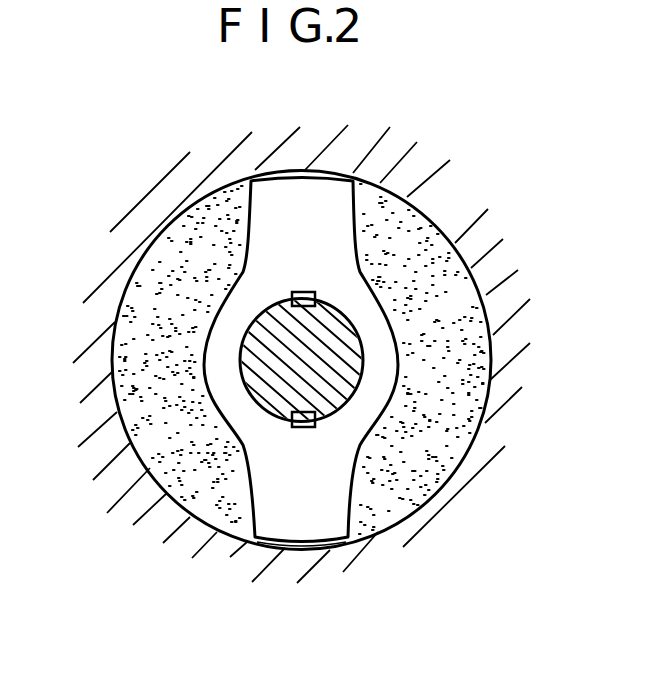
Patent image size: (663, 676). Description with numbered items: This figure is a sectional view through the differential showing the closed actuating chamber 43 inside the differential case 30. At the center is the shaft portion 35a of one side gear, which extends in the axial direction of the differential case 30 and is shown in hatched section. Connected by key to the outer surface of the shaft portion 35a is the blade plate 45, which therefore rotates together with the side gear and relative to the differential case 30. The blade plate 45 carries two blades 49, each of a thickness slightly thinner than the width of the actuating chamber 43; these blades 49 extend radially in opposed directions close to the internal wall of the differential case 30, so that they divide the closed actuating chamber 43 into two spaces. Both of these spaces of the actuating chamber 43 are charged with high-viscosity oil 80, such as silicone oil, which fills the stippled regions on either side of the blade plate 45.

The differential case 30 is at (93, 378).
The closed actuating chamber 43 is at (473, 358).
The high-viscosity oil 80 is at (468, 428).
The blade plate 45 is at (377, 293).
The blades 49 is at (312, 528).
The shaft portion 35a is at (326, 400).